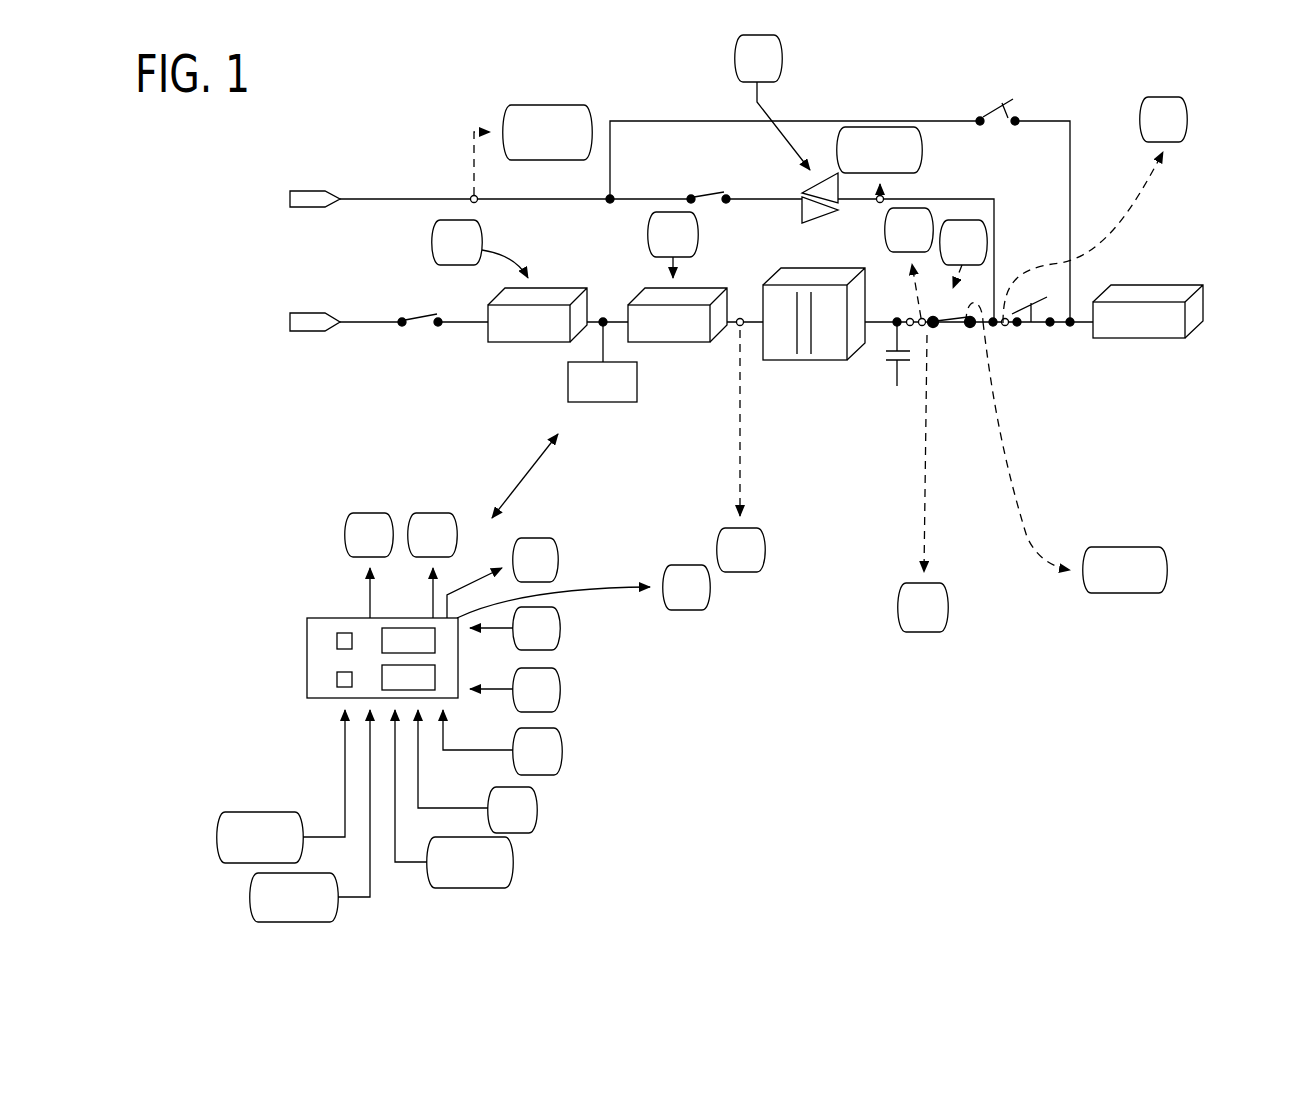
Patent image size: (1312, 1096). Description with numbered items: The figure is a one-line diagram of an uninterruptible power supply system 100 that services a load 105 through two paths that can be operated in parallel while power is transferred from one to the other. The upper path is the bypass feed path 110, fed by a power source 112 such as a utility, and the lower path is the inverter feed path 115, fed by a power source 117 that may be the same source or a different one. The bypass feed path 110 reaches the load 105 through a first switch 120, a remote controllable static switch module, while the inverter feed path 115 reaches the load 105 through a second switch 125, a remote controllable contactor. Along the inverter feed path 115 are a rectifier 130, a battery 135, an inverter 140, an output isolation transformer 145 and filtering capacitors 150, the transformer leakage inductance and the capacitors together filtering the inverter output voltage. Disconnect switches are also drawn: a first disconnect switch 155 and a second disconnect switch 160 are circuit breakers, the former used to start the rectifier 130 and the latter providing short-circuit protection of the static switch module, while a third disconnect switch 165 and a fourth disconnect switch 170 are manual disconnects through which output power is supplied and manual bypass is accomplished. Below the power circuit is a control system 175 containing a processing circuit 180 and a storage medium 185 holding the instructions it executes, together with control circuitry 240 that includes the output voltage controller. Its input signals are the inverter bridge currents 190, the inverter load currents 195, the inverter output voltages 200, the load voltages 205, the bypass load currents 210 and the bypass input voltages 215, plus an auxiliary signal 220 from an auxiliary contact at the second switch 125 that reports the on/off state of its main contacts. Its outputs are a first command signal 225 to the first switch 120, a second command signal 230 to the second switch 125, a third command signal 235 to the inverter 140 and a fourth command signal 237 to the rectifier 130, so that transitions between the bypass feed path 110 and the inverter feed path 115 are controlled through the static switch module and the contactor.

The uninterruptible power supply system 100 is at (458, 106).
The load 105 is at (1153, 284).
The bypass feed path 110 is at (375, 199).
The power source 112 is at (290, 199).
The inverter feed path 115 is at (370, 322).
The power source 117 is at (290, 322).
The first switch 120 is at (829, 172).
The second switch 125 is at (955, 326).
The rectifier 130 is at (528, 342).
The battery 135 is at (608, 402).
The inverter 140 is at (695, 342).
The output isolation transformer 145 is at (800, 268).
The filtering capacitors 150 is at (912, 362).
The disconnect switch K4 155 is at (420, 326).
The disconnect switch K6 160 is at (713, 200).
The disconnect switch Q1 165 is at (1040, 330).
The disconnect switch Q2 170 is at (1010, 94).
The control system 175 is at (316, 716).
The processing circuit 180 is at (337, 640).
The storage medium 185 is at (337, 678).
The inverter bridge currents (Ib) 190 is at (752, 572).
The inverter load currents (IL) 195 is at (885, 230).
The inverter output voltages (Uo) 200 is at (925, 632).
The load voltages (UL) 205 is at (1187, 118).
The bypass load currents (Ibyp) 210 is at (924, 138).
The bypass input voltages (Ubyp) 215 is at (543, 105).
The auxiliary contact signal (aux) 220 is at (1133, 547).
The command signal S1 225 is at (735, 60).
The command signal S2 230 is at (965, 220).
The command signal S3 235 is at (648, 235).
The command signal S4 237 is at (432, 242).
The control circuitry 240 is at (382, 642).